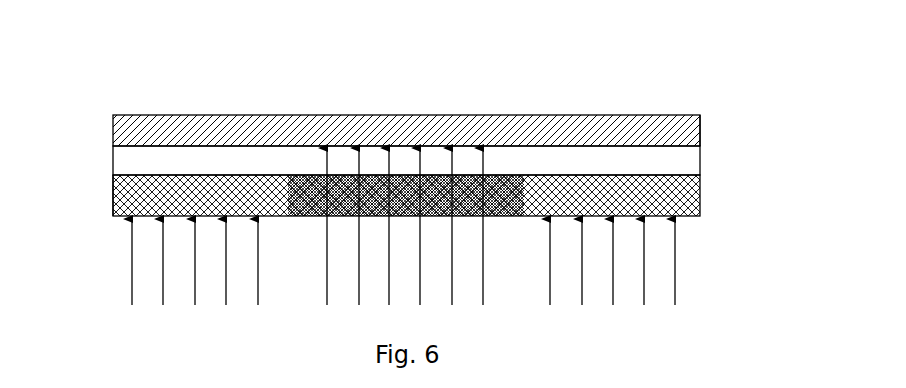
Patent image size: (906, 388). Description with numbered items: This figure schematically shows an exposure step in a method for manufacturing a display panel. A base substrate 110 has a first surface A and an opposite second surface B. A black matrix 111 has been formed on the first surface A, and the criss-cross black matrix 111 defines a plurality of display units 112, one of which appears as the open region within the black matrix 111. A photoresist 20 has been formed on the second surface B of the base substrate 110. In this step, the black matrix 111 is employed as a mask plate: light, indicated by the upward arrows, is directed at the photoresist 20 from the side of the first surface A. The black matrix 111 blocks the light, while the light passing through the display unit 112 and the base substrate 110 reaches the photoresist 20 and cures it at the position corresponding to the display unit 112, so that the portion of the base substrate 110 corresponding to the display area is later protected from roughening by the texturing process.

The photoresist 20 is at (128, 129).
The base substrate 110 is at (573, 160).
The black matrix 111 is at (700, 208).
The display unit 112 is at (297, 197).
The first surface A is at (118, 177).
The second surface B is at (700, 146).